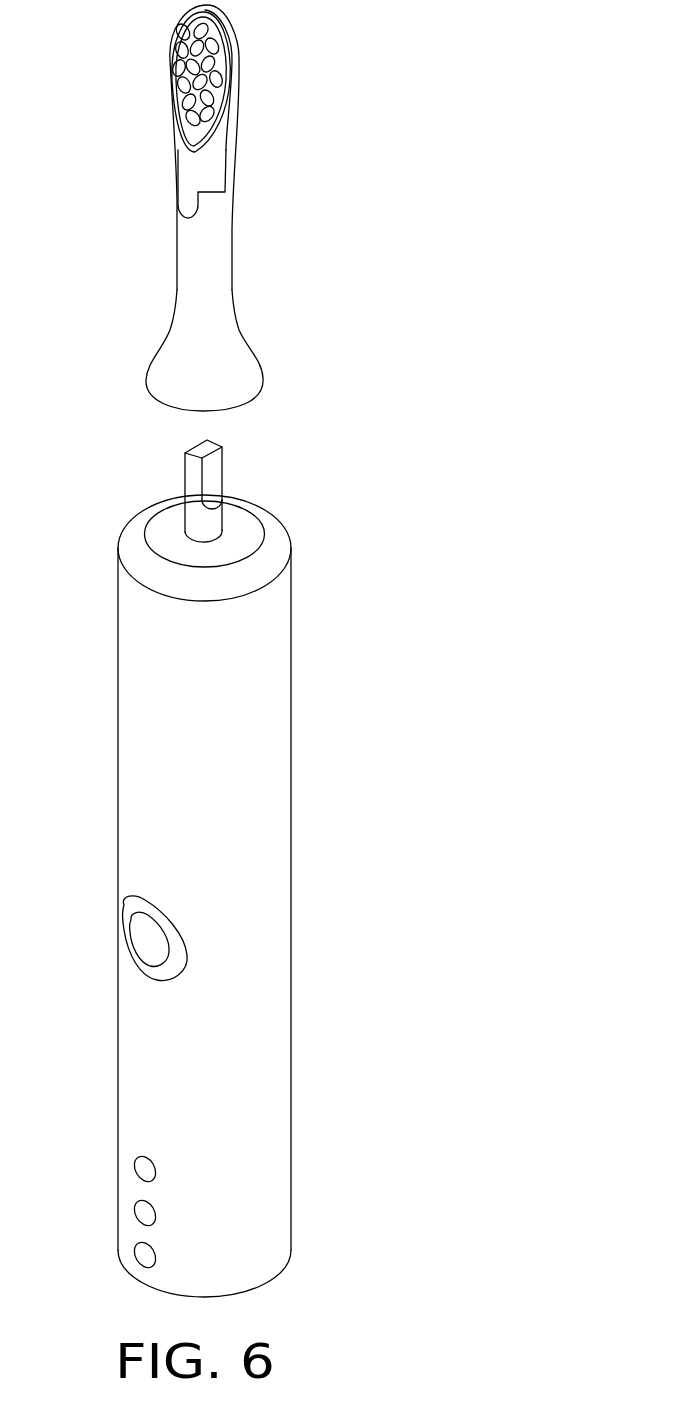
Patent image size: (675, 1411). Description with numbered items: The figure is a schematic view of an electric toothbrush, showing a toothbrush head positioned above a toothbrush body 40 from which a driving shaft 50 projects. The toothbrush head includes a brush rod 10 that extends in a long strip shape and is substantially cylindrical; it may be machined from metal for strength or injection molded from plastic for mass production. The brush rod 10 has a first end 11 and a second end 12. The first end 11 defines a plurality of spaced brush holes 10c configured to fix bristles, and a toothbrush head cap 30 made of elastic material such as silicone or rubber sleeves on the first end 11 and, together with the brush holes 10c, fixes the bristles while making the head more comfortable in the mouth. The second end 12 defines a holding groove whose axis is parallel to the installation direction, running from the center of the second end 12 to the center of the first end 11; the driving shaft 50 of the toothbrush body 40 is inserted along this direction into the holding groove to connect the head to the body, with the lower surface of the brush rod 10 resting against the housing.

The brush rod 10 is at (217, 298).
The first end 11 is at (163, 35).
The brush holes 10c is at (173, 68).
The toothbrush head cap 30 is at (187, 173).
The second end 12 is at (150, 352).
The toothbrush body 40 is at (263, 800).
The driving shaft 50 is at (195, 483).